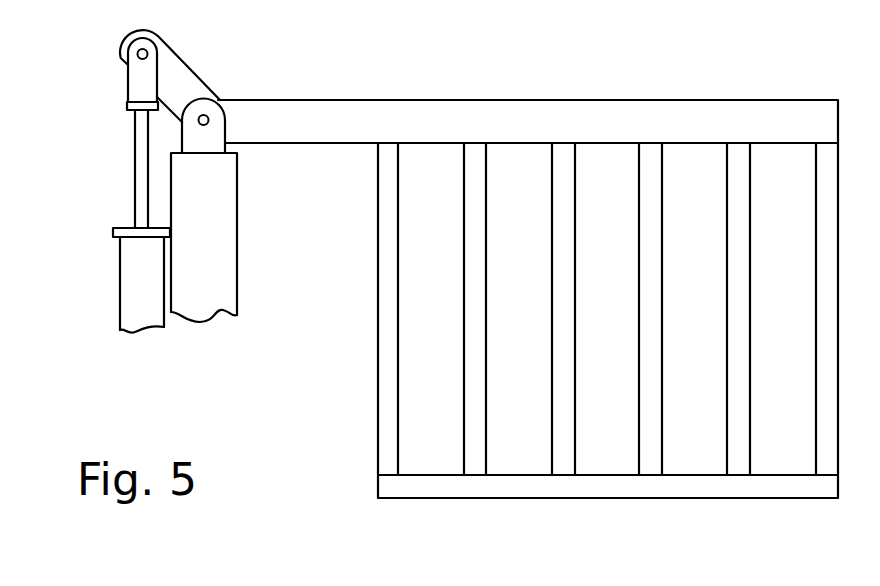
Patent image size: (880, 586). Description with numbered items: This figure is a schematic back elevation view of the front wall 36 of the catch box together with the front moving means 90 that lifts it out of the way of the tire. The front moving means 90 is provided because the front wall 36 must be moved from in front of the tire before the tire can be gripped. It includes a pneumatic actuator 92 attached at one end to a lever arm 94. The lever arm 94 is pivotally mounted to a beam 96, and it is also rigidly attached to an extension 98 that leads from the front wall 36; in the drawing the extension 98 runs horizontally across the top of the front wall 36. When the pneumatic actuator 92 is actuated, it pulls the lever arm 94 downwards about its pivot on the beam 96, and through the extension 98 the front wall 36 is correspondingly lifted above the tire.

The front wall 36 is at (658, 498).
The front moving means 90 is at (108, 282).
The pneumatic actuator 92 is at (120, 330).
The lever arm 94 is at (177, 55).
The beam 96 is at (238, 252).
The extension 98 is at (302, 100).